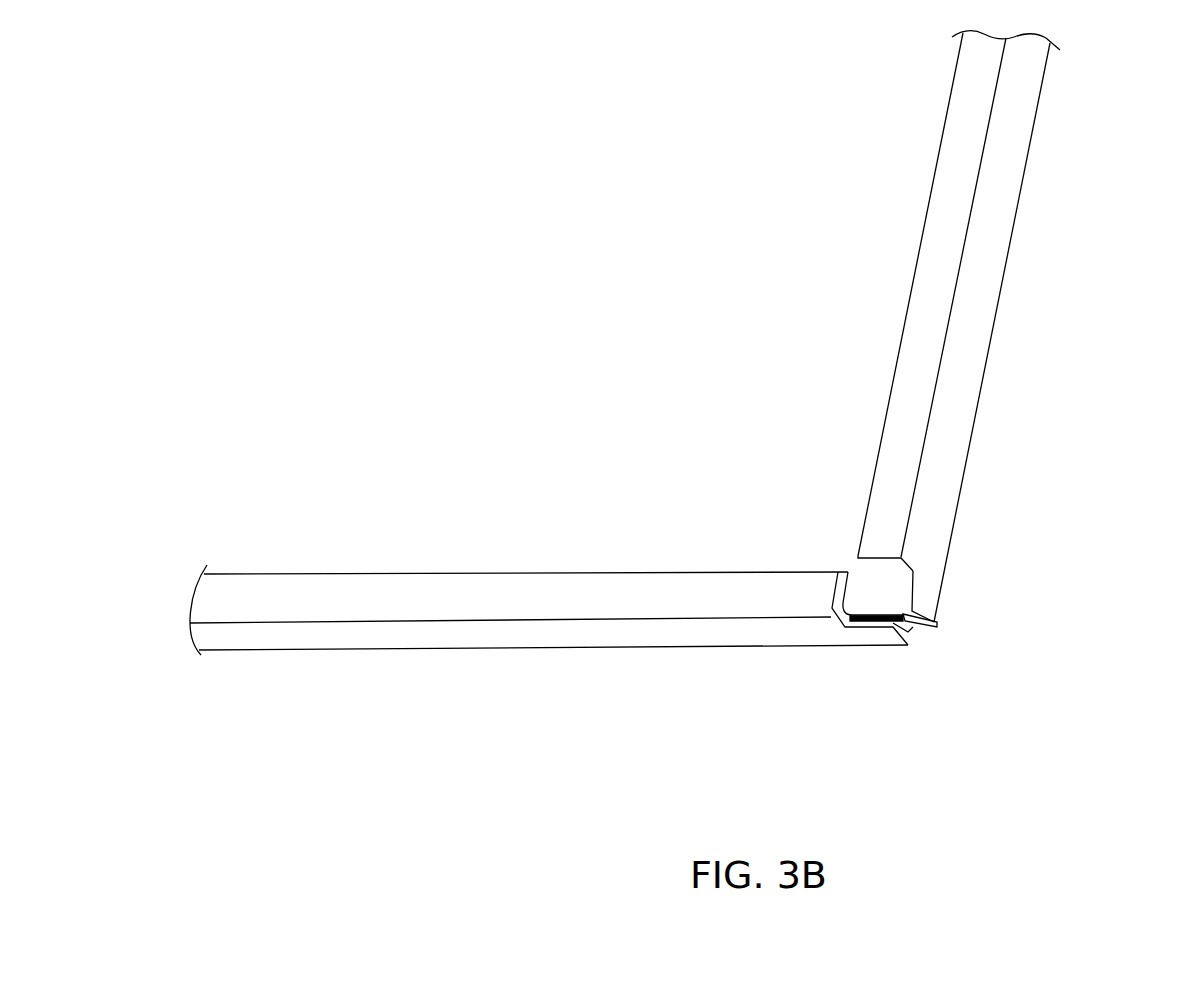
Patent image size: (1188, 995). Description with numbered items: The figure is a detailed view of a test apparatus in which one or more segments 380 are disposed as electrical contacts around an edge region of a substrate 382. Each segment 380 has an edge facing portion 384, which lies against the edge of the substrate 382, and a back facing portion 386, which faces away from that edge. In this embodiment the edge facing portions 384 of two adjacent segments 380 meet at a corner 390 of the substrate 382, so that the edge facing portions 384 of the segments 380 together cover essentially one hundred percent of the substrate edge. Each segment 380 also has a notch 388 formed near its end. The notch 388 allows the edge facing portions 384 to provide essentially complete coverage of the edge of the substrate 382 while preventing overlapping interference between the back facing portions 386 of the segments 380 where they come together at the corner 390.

The segment 380 is at (1003, 283).
The substrate 382 is at (712, 388).
The edge facing portion 384 is at (943, 590).
The back facing portion 386 is at (870, 489).
The notch 388 is at (873, 624).
The corner 390 is at (913, 627).